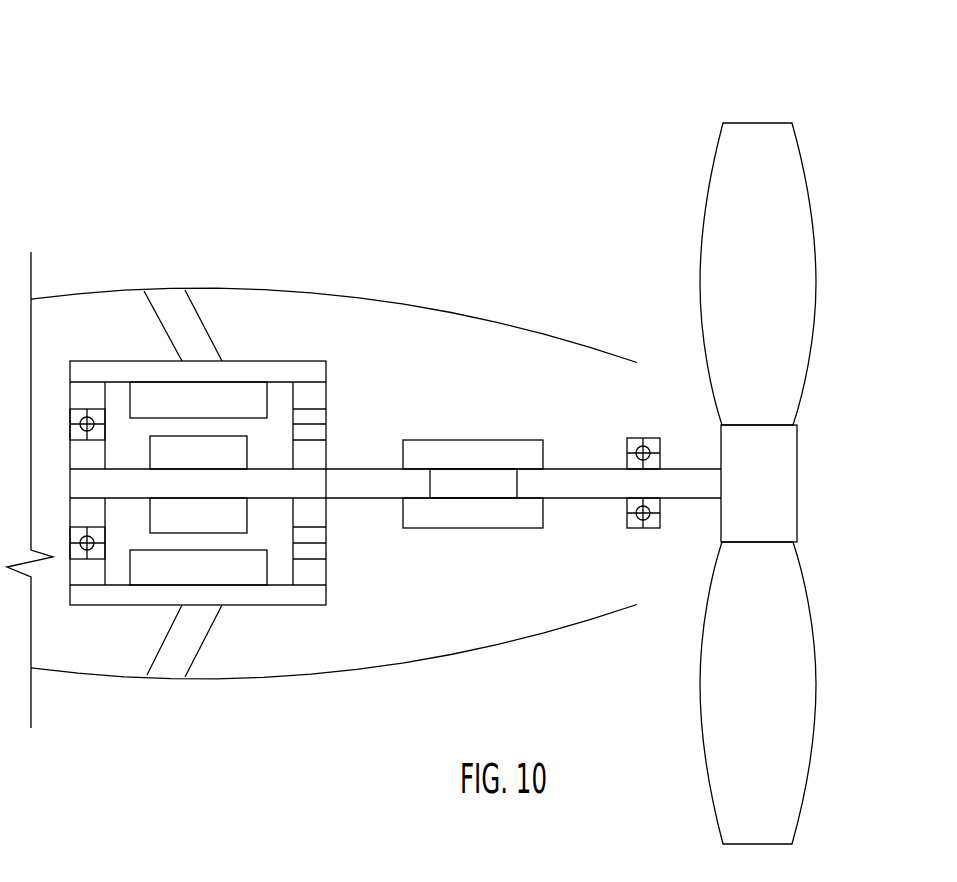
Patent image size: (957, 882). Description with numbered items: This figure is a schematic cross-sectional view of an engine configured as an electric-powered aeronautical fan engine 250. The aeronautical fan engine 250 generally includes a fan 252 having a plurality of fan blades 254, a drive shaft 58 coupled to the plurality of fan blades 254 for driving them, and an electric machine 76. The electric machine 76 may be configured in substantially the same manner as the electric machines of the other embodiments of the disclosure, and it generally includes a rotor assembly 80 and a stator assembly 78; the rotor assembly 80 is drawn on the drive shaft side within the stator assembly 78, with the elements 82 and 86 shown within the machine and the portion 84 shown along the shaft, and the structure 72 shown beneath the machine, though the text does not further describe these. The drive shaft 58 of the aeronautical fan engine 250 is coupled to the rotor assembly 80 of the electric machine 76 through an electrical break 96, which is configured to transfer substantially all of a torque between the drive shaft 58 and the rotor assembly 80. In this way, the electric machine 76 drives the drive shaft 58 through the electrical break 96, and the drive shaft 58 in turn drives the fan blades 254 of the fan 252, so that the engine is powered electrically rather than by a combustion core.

The aeronautical fan engine 250 is at (607, 132).
The fan 252 is at (812, 456).
The fan blades 254 is at (783, 238).
The electric machine 76 is at (127, 330).
The stator assembly 78 is at (342, 363).
The stator 86 is at (200, 393).
The rotor magnets 82 is at (213, 448).
The rotor assembly 80 is at (138, 455).
The shaft 84 is at (352, 468).
The electrical break 96 is at (463, 440).
The drive shaft 58 is at (593, 469).
The mount strut 72 is at (198, 645).